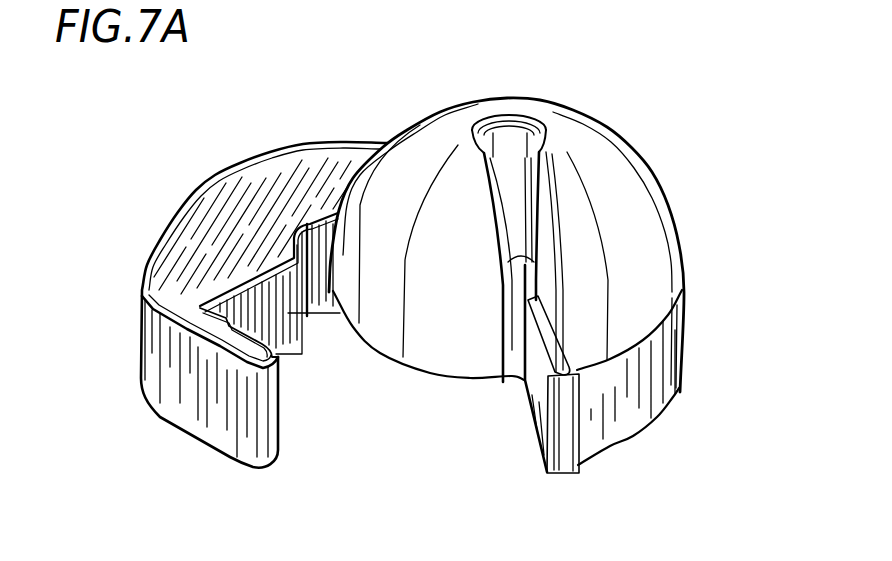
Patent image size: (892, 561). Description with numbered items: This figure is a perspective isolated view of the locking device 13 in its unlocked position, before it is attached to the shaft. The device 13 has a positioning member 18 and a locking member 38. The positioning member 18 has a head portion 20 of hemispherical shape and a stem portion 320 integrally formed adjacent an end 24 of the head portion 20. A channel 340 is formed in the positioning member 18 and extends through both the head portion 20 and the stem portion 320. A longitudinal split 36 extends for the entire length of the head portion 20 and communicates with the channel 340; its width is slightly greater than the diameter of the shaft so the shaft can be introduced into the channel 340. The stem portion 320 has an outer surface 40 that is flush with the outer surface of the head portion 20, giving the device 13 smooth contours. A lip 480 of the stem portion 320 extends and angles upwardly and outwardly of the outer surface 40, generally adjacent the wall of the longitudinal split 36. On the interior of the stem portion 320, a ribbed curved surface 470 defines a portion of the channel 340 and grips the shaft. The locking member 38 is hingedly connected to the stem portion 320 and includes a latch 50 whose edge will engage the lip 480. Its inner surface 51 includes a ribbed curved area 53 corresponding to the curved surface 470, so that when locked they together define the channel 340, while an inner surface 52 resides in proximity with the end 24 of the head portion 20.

The locking device 13 is at (696, 226).
The positioning member 18 is at (635, 160).
The head portion 20 is at (409, 133).
The channel 340 is at (513, 130).
The longitudinal split 36 is at (550, 266).
The curved surface 470 is at (520, 280).
The lip 480 is at (566, 458).
The end 24 is at (415, 367).
The outer surface 40 is at (620, 428).
The stem portion 320 is at (667, 387).
The locking member 38 is at (183, 220).
The inner surface 52 is at (280, 168).
The curved area 53 is at (323, 317).
The inner surface 51 is at (287, 350).
The latch 50 is at (257, 453).